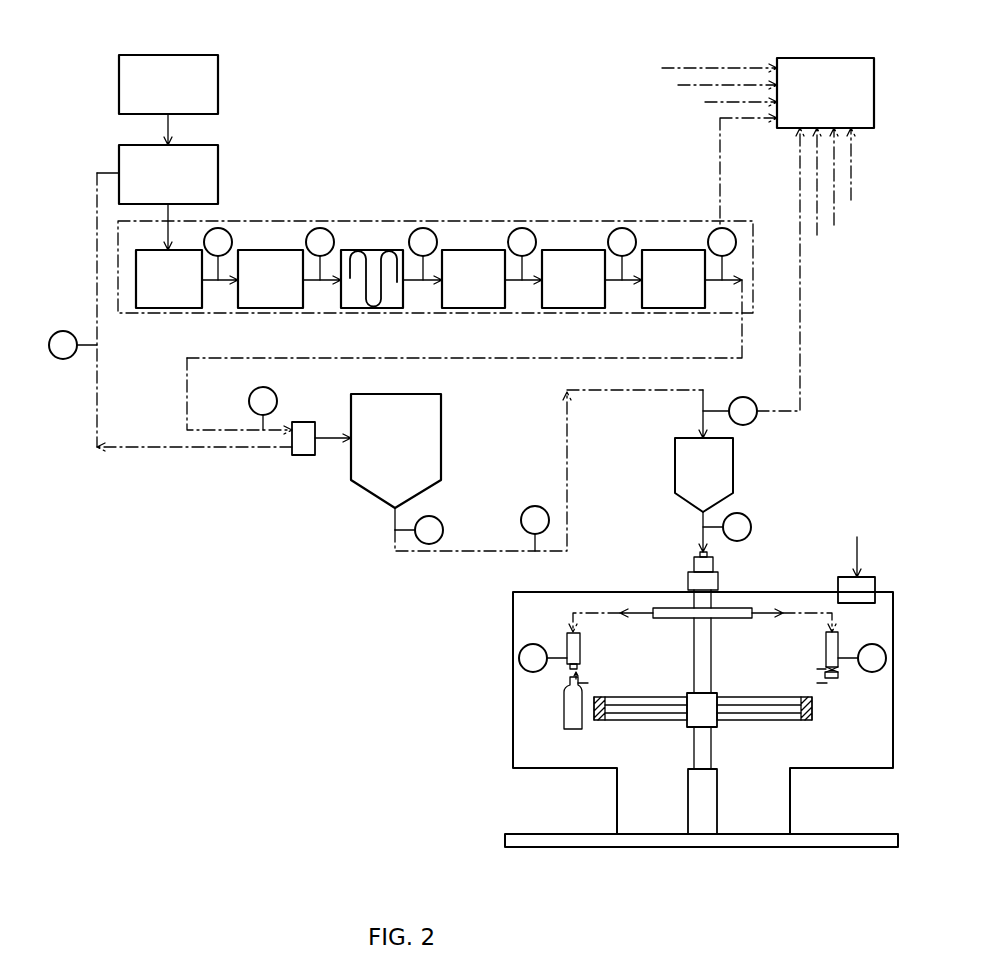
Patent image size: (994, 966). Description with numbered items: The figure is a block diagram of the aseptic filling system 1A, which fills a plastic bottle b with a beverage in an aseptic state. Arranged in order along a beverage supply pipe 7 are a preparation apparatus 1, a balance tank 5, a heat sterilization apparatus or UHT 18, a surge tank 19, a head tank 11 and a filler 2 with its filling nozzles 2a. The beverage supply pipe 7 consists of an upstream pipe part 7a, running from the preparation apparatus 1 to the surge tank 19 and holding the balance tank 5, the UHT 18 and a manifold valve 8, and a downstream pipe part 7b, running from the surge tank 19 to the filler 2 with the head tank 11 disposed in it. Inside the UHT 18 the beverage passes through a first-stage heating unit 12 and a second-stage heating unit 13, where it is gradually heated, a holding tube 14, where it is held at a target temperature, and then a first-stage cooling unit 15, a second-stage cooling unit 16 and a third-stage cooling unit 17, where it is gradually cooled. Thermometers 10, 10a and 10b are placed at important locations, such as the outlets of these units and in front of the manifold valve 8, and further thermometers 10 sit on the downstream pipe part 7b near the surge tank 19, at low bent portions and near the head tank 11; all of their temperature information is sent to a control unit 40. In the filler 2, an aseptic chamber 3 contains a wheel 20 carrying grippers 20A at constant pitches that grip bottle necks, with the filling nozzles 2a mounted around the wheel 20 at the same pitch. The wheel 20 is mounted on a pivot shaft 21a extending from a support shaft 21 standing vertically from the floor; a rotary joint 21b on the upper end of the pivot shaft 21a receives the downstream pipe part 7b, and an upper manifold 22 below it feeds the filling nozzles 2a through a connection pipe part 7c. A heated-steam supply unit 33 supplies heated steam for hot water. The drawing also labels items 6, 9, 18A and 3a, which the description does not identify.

The preparation apparatus 1 is at (218, 83).
The balance tank 5 is at (218, 160).
The return line 6 is at (102, 172).
The beverage supply pipe 7 is at (528, 362).
The upstream pipe part 7a is at (220, 360).
The downstream pipe part 7b is at (613, 394).
The connection pipe part 7c is at (791, 611).
The manifold valve 8 is at (303, 456).
The sensor unit 9 is at (818, 676).
The thermometer 10 is at (423, 228).
The thermometer 10a is at (218, 228).
The thermometer 10b is at (320, 228).
The head tank 11 is at (675, 466).
The first-stage heating unit 12 is at (167, 308).
The second-stage heating unit 13 is at (270, 308).
The holding tube 14 is at (373, 308).
The first-stage cooling unit 15 is at (475, 309).
The second-stage cooling unit 16 is at (578, 309).
The third-stage cooling unit 17 is at (678, 309).
The heat sterilization apparatus 18 is at (689, 220).
The preparation line 18A is at (489, 198).
The surge tank 19 is at (441, 422).
The wheel 20 is at (605, 722).
The gripper 20A is at (828, 685).
The support shaft 21 is at (688, 802).
The pivot shaft 21a is at (694, 678).
The rotary joint 21b is at (688, 578).
The upper manifold 22 is at (732, 620).
The filler 2 is at (638, 594).
The filling nozzle 2a is at (582, 640).
The aseptic chamber 3 is at (848, 769).
The inlet 3a is at (871, 577).
The heated-steam supply unit 33 is at (856, 545).
The control unit 40 is at (822, 58).
The aseptic filling system 1A is at (838, 430).
The plastic bottle b is at (564, 710).